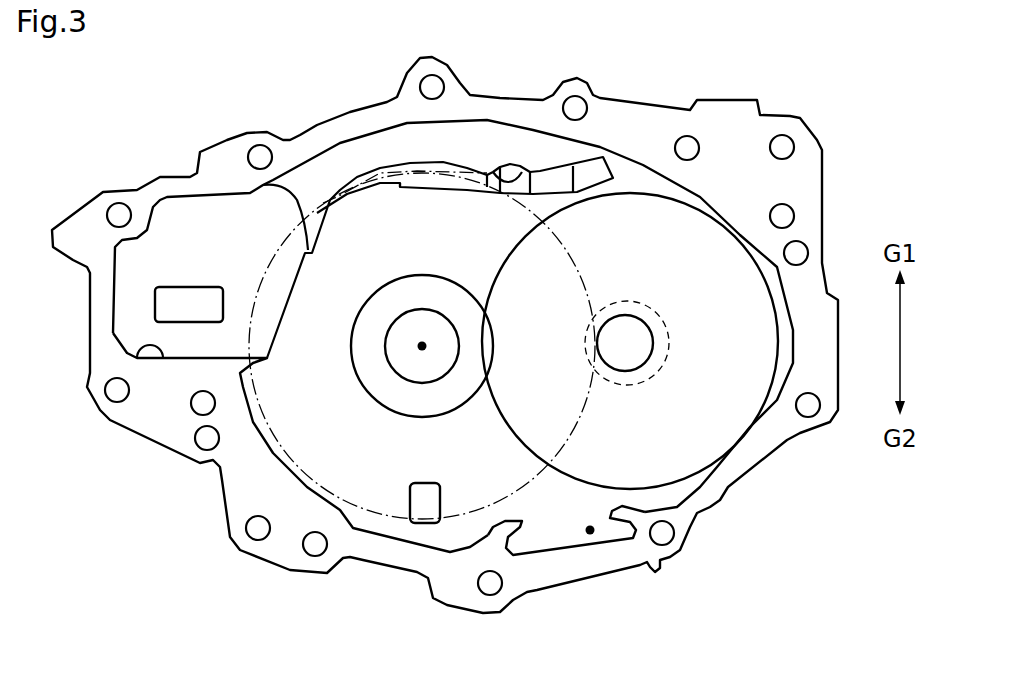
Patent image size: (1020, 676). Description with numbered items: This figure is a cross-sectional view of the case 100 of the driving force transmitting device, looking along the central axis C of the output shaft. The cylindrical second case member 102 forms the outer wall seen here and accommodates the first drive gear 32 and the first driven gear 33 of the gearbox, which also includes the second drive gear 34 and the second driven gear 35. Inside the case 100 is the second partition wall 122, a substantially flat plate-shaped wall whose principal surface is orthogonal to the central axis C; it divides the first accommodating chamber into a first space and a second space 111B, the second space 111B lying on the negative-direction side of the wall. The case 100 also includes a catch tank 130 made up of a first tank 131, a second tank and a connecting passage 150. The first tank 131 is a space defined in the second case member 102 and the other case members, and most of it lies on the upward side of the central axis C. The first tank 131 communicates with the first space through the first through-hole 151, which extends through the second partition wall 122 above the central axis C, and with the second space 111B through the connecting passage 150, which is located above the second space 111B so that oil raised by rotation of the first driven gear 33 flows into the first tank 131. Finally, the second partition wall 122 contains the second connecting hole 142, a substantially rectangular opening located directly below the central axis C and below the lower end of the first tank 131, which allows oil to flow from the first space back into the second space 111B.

The case 100 is at (203, 78).
The catch tank 130 is at (219, 159).
The second case member 102 is at (720, 123).
The connecting passage 150 is at (402, 143).
The first through-hole 151 is at (163, 307).
The first tank 131 is at (138, 362).
The first drive gear 32 is at (368, 400).
The second drive gear 34 is at (653, 385).
The first driven gear 33 is at (717, 467).
The second driven gear 35 is at (378, 515).
The second connecting hole 142 is at (425, 520).
The second partition wall 122 is at (543, 505).
The second space 111B is at (590, 534).
The central axis C is at (422, 346).